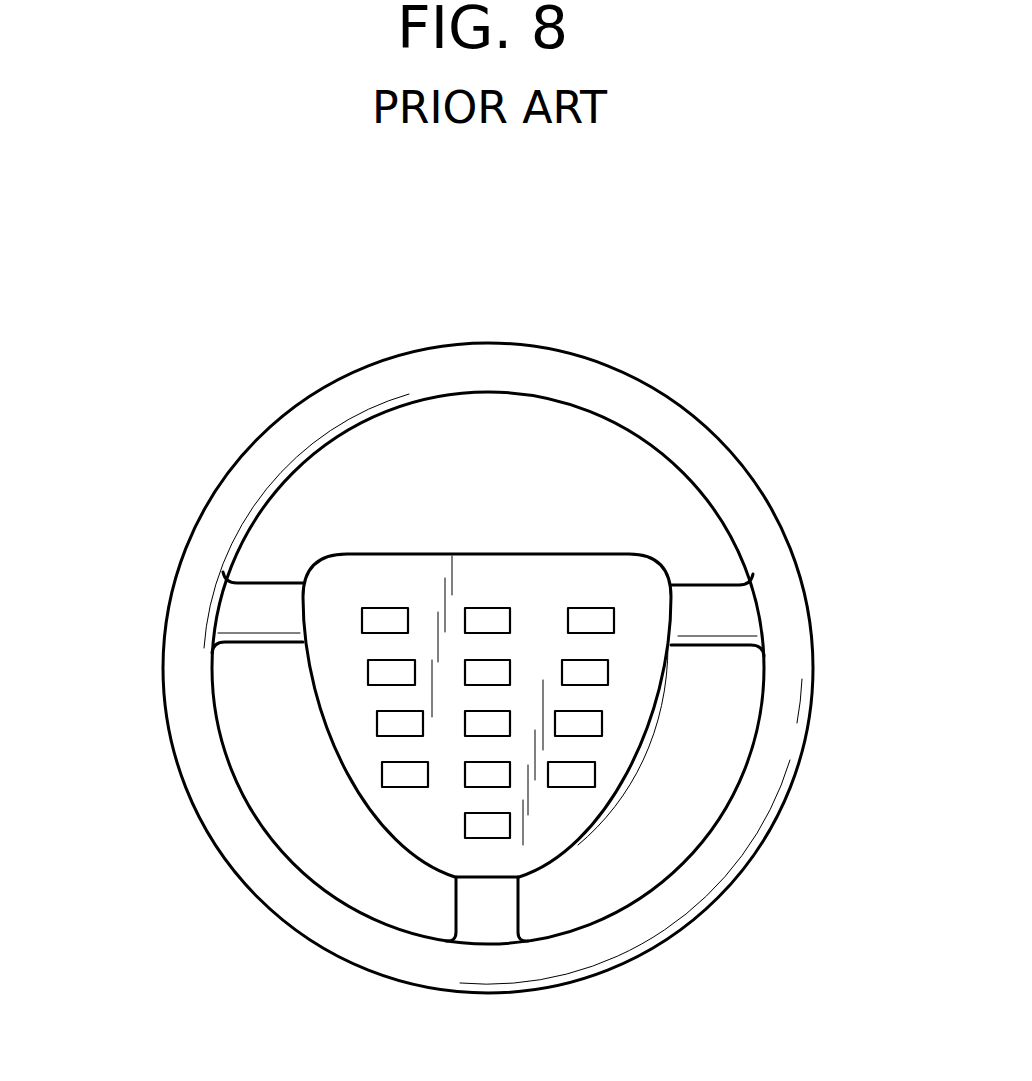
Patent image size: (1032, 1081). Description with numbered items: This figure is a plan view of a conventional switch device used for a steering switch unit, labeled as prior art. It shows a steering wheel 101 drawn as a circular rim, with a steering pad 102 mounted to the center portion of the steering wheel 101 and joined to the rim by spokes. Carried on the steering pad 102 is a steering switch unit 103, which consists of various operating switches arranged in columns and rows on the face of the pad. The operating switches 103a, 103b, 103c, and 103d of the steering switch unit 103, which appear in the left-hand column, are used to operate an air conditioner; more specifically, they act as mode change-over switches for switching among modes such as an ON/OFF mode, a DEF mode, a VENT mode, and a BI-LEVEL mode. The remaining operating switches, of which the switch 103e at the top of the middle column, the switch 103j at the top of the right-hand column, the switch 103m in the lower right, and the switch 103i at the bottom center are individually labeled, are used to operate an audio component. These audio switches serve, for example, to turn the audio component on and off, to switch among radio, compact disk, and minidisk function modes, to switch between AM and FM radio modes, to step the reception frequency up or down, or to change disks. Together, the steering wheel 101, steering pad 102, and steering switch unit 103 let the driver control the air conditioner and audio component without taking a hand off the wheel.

The steering wheel 101 is at (693, 457).
The steering pad 102 is at (633, 588).
The steering switch unit 103 is at (468, 588).
The operating switch 103a is at (370, 615).
The operating switch 103b is at (375, 673).
The operating switch 103c is at (382, 726).
The operating switch 103d is at (392, 773).
The operating switch 103e is at (490, 618).
The operating switch 103i is at (495, 826).
The operating switch 103j is at (598, 623).
The operating switch 103m is at (595, 773).